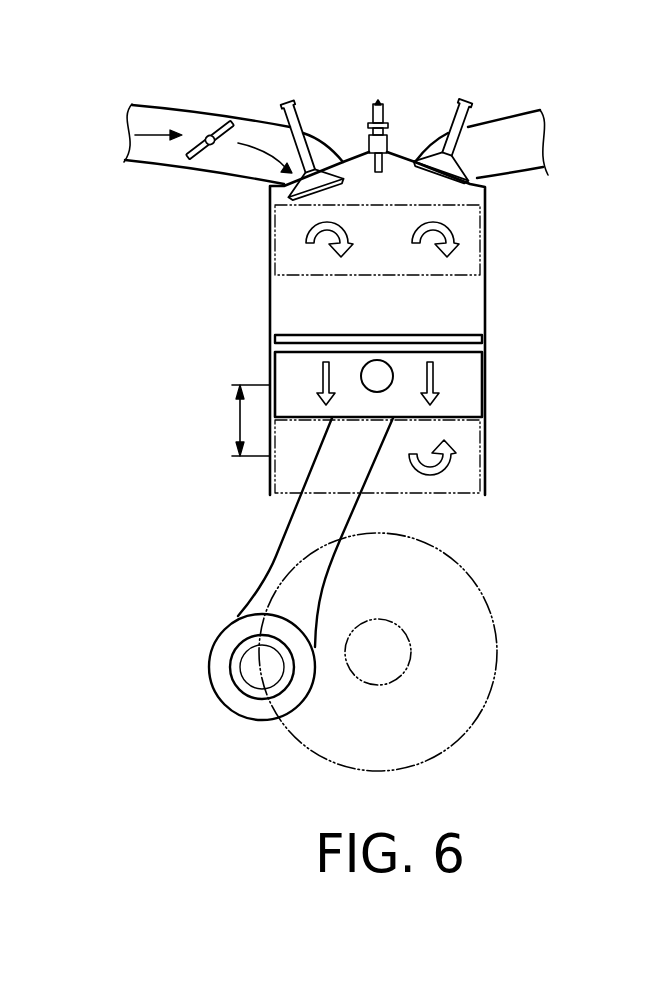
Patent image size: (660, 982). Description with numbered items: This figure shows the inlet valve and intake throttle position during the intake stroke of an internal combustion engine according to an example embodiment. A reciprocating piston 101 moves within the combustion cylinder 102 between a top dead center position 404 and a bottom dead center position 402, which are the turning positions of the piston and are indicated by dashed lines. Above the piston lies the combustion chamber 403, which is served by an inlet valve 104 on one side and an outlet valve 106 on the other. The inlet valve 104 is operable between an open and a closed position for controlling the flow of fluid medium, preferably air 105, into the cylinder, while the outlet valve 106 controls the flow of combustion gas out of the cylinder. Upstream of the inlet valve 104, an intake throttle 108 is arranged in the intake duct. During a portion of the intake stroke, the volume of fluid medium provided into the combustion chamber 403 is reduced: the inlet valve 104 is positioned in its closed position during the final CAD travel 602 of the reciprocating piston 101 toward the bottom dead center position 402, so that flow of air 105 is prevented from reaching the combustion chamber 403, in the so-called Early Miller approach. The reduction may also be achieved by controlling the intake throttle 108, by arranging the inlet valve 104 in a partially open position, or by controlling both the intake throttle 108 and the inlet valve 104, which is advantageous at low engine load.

The reciprocating piston 101 is at (485, 382).
The combustion cylinder 102 is at (268, 305).
The inlet valve 104 is at (272, 108).
The air 105 is at (138, 137).
The outlet valve 106 is at (485, 108).
The intake throttle 108 is at (190, 150).
The bottom dead center position 402 is at (485, 478).
The combustion chamber 403 is at (438, 305).
The top dead center position 404 is at (485, 223).
The final CAD travel 602 is at (226, 420).